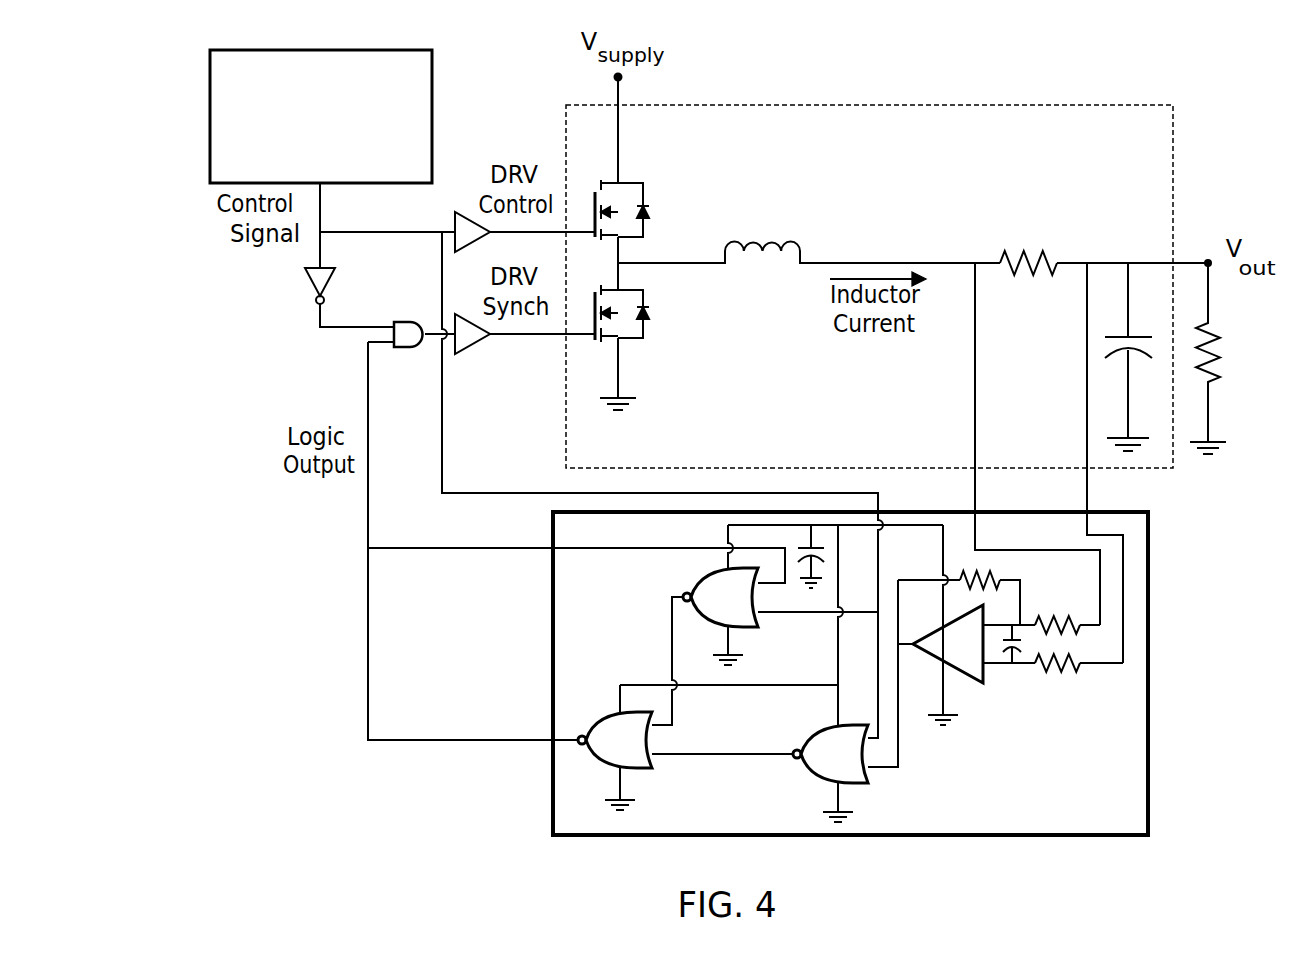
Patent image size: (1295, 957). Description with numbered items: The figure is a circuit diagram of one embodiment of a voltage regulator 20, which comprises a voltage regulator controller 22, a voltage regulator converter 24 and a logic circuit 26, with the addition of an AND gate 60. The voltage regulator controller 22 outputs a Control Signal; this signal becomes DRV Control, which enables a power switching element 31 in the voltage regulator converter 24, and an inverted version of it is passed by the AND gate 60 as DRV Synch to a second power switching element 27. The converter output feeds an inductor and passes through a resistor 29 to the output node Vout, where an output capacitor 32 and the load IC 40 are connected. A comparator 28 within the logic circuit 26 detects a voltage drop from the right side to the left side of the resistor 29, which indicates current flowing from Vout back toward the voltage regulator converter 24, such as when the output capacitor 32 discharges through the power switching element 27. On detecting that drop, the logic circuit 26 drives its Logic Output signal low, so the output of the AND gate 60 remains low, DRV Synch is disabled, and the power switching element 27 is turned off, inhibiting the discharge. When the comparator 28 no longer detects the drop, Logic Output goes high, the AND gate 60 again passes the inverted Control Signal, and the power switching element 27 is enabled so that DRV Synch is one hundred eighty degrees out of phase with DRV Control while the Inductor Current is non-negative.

The voltage regulator 20 is at (800, 42).
The voltage regulator controller 22 is at (320, 50).
The voltage regulator converter 24 is at (868, 105).
The logic circuit 26 is at (1150, 673).
The power switching element 27 is at (606, 342).
The comparator 28 is at (983, 680).
The resistor 29 is at (1035, 252).
The power switching element 31 is at (608, 184).
The output capacitor 32 is at (1128, 256).
The IC 40 is at (1232, 355).
The AND gate 60 is at (412, 320).